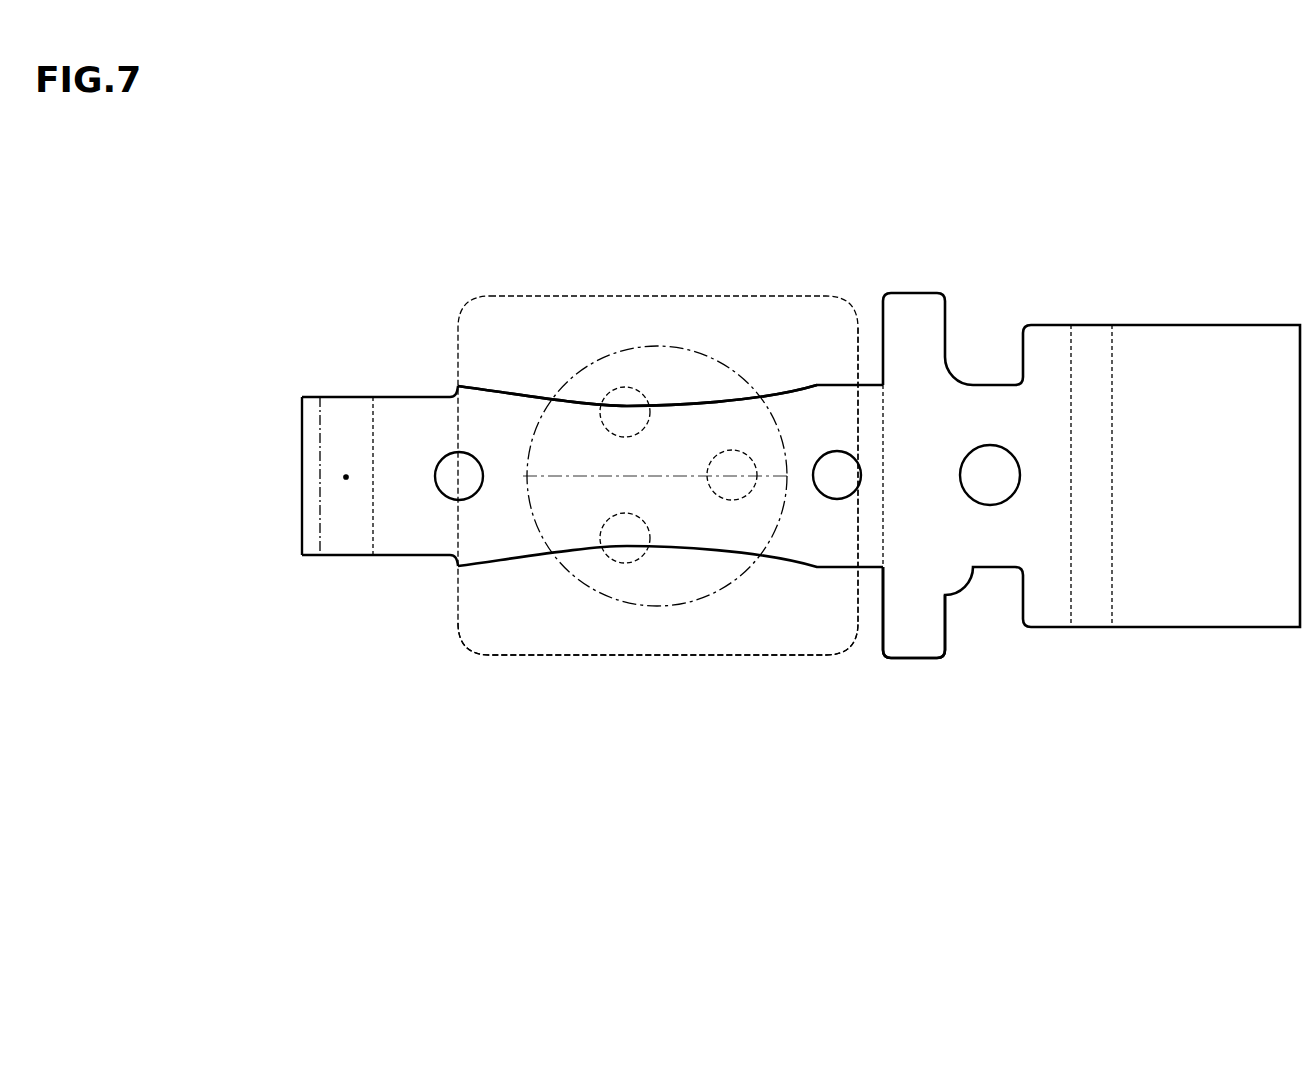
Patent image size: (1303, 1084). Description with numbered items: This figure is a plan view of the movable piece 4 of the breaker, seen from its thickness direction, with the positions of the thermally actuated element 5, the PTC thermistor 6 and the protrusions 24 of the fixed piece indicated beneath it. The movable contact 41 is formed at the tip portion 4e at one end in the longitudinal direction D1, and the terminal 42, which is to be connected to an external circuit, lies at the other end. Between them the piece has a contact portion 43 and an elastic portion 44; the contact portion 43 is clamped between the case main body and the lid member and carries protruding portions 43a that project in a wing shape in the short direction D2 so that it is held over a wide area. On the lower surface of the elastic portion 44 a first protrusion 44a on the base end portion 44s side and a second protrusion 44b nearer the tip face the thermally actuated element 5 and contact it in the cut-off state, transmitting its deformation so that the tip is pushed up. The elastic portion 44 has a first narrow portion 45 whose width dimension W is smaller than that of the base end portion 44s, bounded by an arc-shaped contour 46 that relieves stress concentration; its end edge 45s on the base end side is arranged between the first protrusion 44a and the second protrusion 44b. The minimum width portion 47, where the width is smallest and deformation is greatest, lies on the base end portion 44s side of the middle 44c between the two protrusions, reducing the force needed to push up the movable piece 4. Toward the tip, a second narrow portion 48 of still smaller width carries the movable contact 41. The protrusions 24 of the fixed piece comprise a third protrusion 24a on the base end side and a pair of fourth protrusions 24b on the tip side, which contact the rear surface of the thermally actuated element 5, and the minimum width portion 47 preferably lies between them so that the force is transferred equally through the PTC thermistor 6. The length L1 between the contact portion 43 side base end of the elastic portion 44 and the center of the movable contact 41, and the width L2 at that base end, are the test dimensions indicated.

The movable piece 4 is at (766, 475).
The tip portion 4e is at (302, 437).
The movable contact 41 is at (345, 490).
The terminal 42 is at (1193, 568).
The contact portion 43 is at (957, 510).
The protruding portions 43a is at (913, 625).
The elastic portion 44 is at (663, 394).
The first protrusion 44a is at (837, 477).
The second protrusion 44b is at (460, 475).
The middle 44c is at (650, 478).
The base end portion 44s is at (840, 517).
The first narrow portion 45 is at (667, 512).
The end edge 45s is at (818, 533).
The arc-shaped contour 46 is at (673, 403).
The minimum width portion 47 is at (658, 480).
The second narrow portion 48 is at (405, 478).
The protrusions 24 is at (663, 510).
The third protrusion 24a is at (732, 495).
The fourth protrusion 24b is at (625, 560).
The PTC thermistor 6 is at (588, 568).
The thermally actuated element 5 is at (767, 612).
The width dimension W is at (520, 559).
The length L1 is at (347, 477).
The width L2 is at (882, 385).
The longitudinal direction D1 is at (550, 900).
The short direction D2 is at (209, 427).